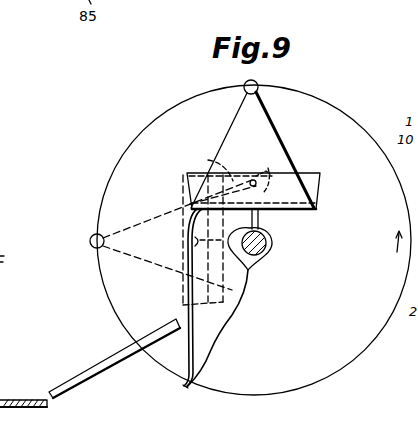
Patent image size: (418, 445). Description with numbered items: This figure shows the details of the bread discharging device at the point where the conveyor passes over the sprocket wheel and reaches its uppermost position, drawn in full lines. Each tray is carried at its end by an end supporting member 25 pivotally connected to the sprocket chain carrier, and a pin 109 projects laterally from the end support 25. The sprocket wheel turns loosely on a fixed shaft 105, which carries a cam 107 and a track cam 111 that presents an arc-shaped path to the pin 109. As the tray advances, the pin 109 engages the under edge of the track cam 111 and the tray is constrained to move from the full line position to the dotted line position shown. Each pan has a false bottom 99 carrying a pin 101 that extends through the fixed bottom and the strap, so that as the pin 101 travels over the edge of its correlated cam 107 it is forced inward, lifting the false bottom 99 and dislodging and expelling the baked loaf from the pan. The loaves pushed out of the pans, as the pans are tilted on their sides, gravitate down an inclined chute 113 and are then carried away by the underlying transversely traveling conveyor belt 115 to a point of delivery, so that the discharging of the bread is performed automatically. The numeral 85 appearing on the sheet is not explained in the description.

The end supporting member 25 is at (232, 134).
The false bottom 99 is at (233, 289).
The pin 101 is at (262, 223).
The fixed shaft 105 is at (271, 247).
The cam 107 is at (249, 258).
The pin 109 is at (256, 176).
The track cam 111 is at (218, 160).
The inclined chute 113 is at (110, 365).
The conveyor belt 115 is at (9, 399).
The wheel rim 85 is at (90, 4).